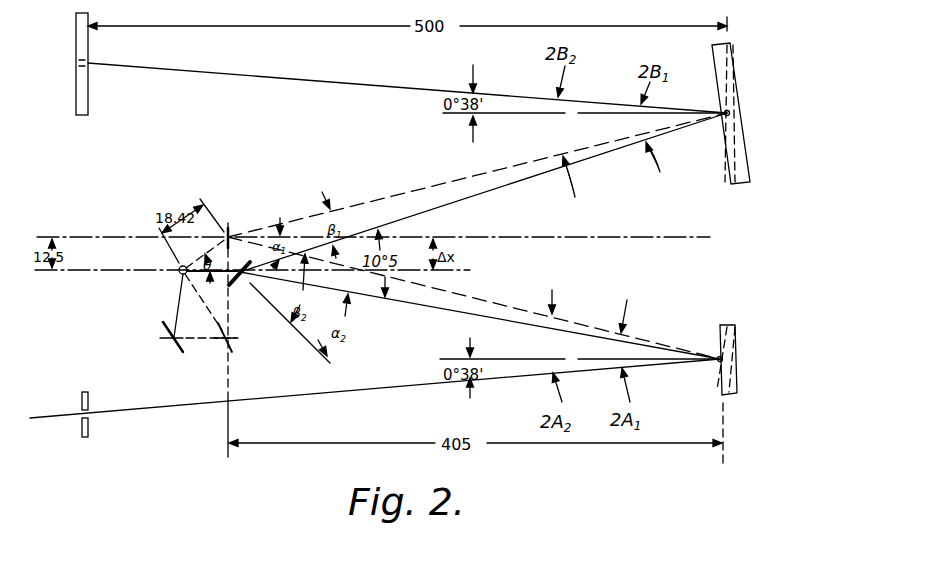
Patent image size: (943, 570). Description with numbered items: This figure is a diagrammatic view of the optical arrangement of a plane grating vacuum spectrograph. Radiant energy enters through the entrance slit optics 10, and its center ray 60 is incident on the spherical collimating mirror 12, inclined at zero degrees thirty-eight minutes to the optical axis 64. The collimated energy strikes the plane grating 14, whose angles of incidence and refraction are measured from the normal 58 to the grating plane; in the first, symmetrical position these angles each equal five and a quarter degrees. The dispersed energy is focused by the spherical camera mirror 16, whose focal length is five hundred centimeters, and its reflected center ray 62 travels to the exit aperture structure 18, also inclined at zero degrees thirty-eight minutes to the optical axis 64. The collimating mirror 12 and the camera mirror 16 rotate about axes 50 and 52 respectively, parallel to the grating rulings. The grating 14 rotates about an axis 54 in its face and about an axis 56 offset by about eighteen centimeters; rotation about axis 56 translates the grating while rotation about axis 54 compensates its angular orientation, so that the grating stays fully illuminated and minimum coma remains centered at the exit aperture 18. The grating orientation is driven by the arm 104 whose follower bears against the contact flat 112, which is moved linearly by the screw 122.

The entrance slit optics 10 is at (80, 410).
The spherical collimating mirror 12 is at (738, 329).
The plane grating 14 is at (233, 237).
The spherical camera mirror 16 is at (737, 77).
The exit aperture structure 18 is at (78, 63).
The axis of rotation of collimating mirror 50 is at (730, 359).
The axis of rotation of camera mirror 52 is at (733, 115).
The grating face axis 54 is at (239, 283).
The offset grating axis 56 is at (178, 269).
The grating normal 58 is at (299, 334).
The center ray incident on collimating mirror 60 is at (375, 389).
The center ray reflected from camera mirror 62 is at (373, 88).
The optical axis 64 is at (561, 240).
The arm 104 is at (178, 305).
The contact flat 112 is at (192, 354).
The screw 122 is at (208, 343).